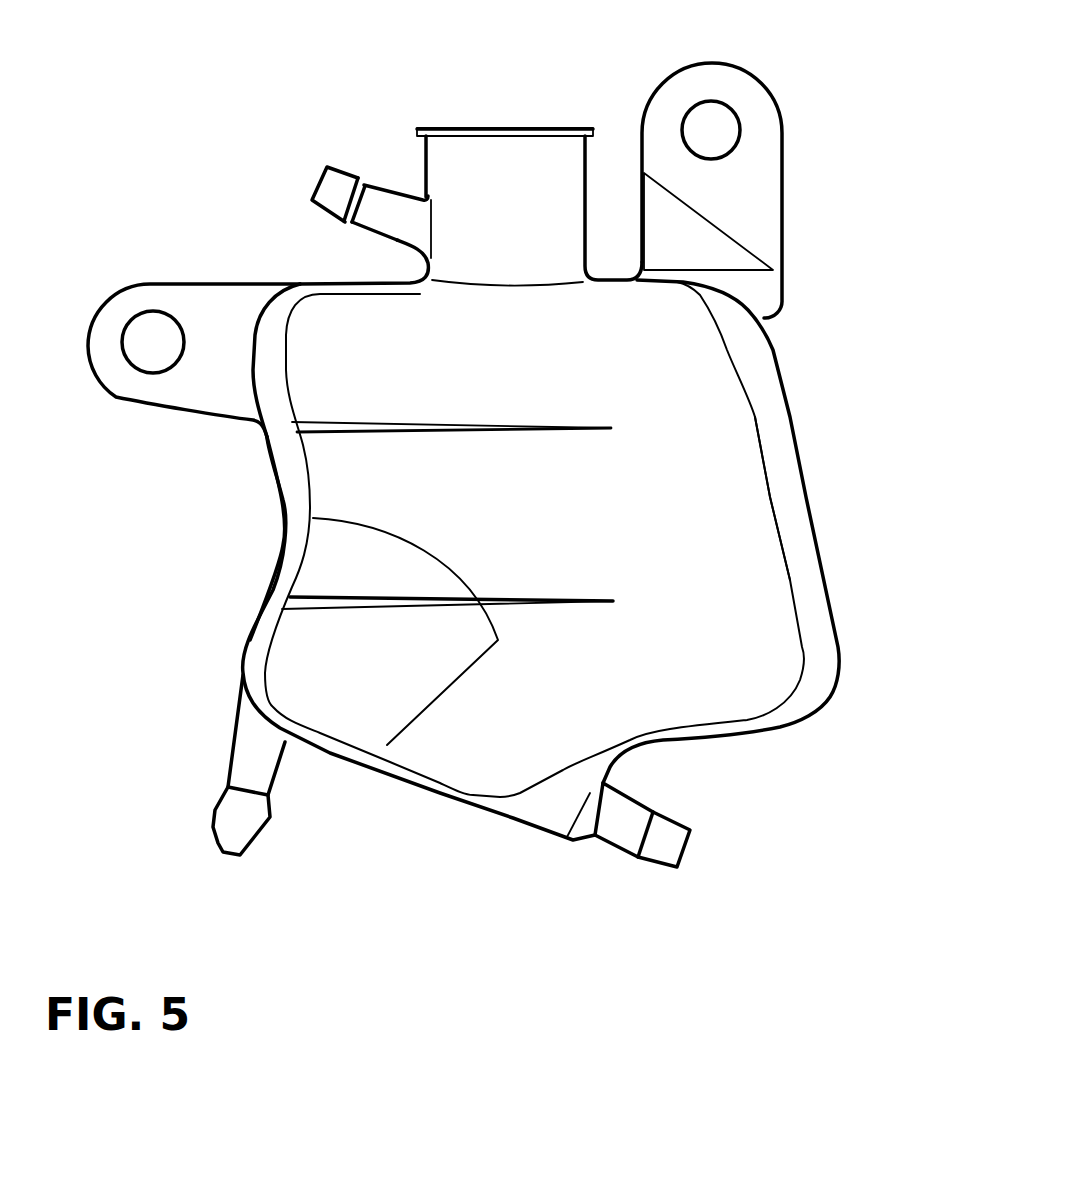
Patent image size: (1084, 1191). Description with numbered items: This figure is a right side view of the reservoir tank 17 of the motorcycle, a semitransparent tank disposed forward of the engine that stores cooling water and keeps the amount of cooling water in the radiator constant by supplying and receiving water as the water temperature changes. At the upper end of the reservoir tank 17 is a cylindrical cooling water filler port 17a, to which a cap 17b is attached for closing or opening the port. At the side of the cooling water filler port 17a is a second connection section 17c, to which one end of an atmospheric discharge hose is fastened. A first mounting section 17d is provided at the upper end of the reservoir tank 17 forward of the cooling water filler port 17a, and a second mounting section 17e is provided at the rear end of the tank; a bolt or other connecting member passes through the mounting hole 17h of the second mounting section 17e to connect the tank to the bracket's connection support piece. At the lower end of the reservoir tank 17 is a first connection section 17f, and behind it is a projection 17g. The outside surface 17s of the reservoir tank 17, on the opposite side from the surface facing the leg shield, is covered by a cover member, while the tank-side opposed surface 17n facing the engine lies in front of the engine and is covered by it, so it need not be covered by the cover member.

The reservoir tank 17 is at (795, 411).
The cooling water filler port 17a is at (587, 187).
The cap 17b is at (478, 128).
The second connection section 17c is at (362, 165).
The first mounting section 17d is at (783, 209).
The second mounting section 17e is at (189, 393).
The first connection section 17f is at (610, 847).
The projection 17g is at (270, 820).
The mounting hole 17h is at (172, 325).
The tank-side opposed surface 17n is at (277, 540).
The outside surface 17s is at (740, 510).